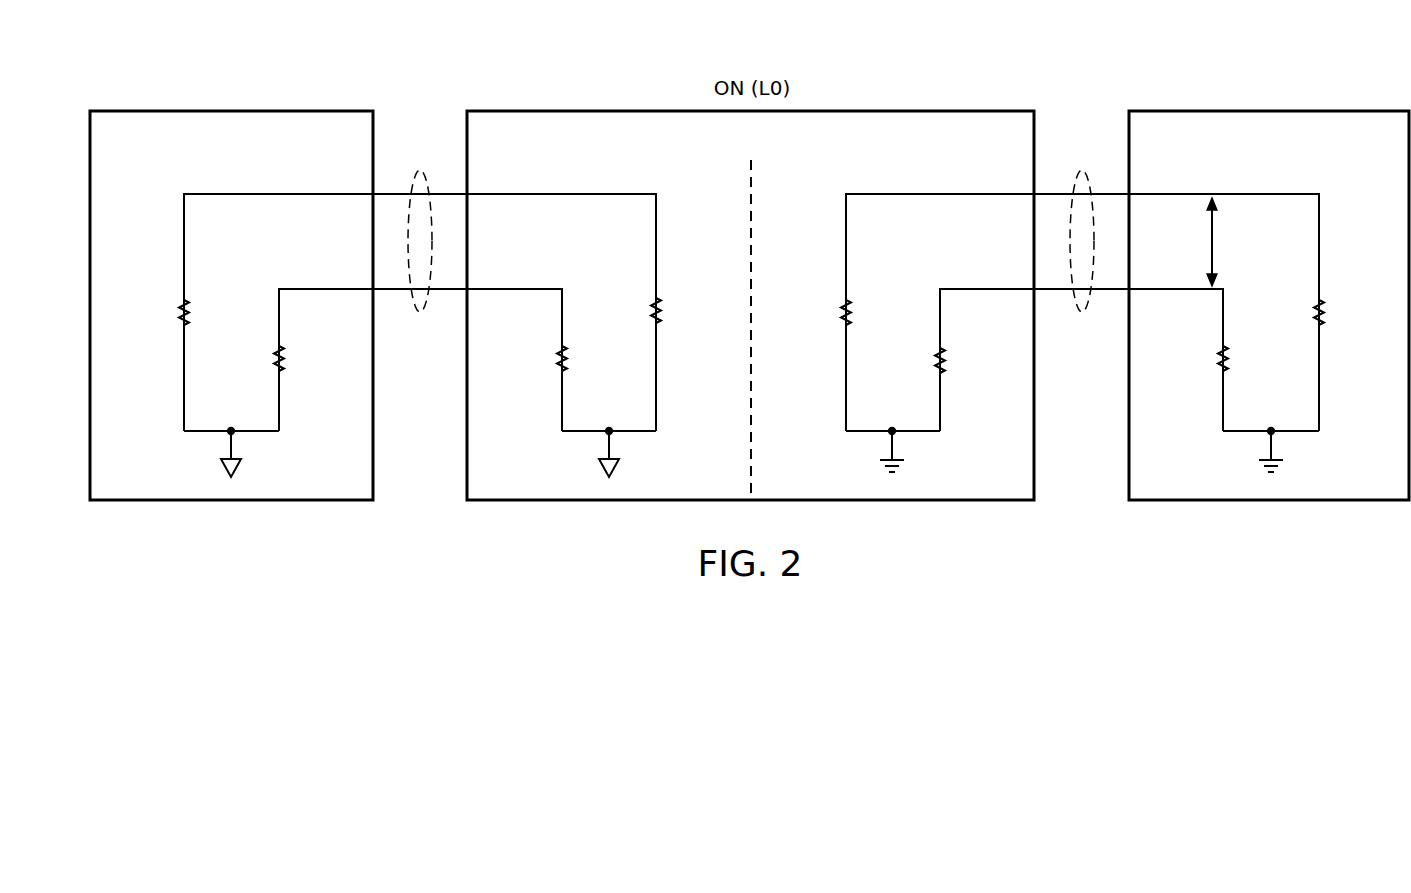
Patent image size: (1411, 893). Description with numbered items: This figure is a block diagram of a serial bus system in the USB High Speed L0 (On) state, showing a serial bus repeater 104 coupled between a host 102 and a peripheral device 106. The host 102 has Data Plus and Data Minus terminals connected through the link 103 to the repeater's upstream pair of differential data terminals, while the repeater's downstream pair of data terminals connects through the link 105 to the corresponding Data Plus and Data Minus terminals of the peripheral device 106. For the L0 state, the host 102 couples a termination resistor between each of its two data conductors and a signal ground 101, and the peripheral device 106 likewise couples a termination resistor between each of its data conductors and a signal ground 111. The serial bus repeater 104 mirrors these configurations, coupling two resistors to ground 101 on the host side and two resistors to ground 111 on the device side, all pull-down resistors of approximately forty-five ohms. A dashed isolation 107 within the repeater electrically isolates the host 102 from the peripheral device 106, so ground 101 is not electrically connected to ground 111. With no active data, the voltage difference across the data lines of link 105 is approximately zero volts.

The signal ground 101 is at (222, 471).
The host 102 is at (206, 102).
The link 103 is at (420, 170).
The serial bus repeater 104 is at (665, 102).
The link 105 is at (1082, 170).
The peripheral device 106 is at (1291, 100).
The isolation 107 is at (752, 385).
The signal ground 111 is at (906, 466).